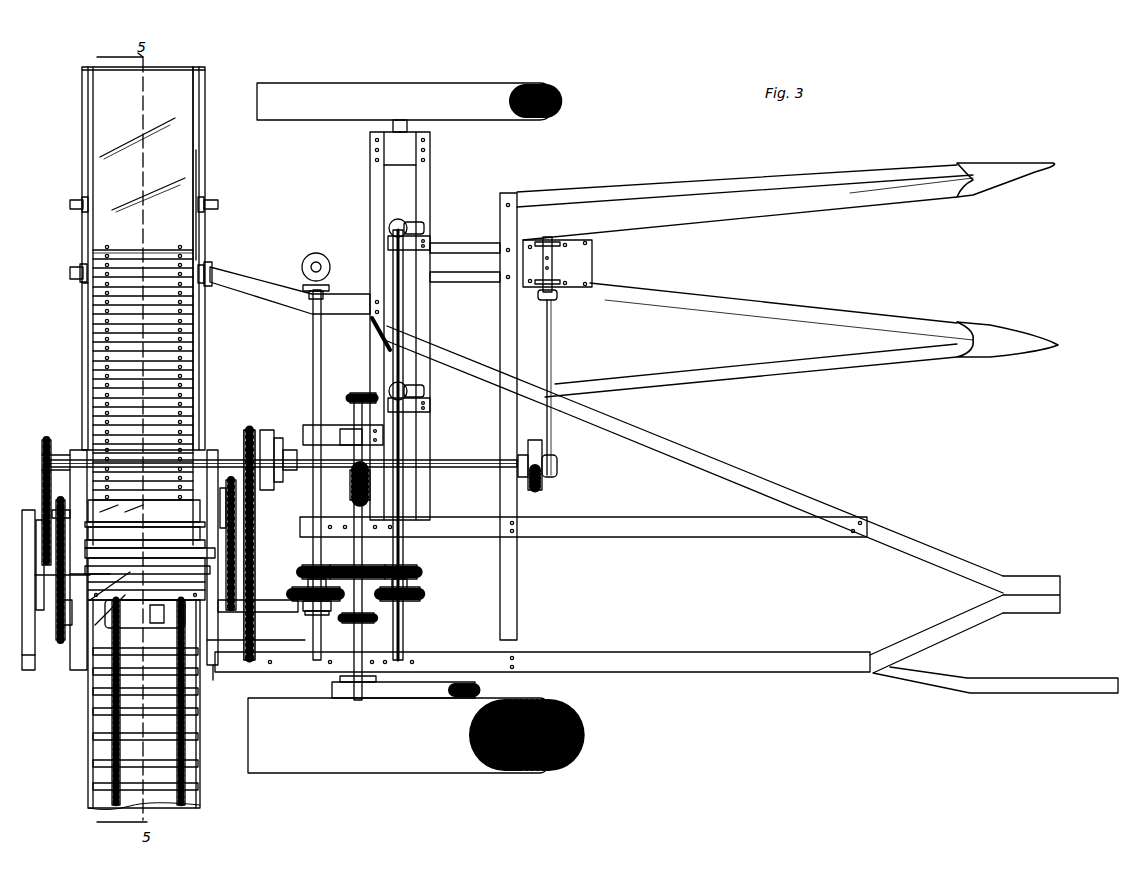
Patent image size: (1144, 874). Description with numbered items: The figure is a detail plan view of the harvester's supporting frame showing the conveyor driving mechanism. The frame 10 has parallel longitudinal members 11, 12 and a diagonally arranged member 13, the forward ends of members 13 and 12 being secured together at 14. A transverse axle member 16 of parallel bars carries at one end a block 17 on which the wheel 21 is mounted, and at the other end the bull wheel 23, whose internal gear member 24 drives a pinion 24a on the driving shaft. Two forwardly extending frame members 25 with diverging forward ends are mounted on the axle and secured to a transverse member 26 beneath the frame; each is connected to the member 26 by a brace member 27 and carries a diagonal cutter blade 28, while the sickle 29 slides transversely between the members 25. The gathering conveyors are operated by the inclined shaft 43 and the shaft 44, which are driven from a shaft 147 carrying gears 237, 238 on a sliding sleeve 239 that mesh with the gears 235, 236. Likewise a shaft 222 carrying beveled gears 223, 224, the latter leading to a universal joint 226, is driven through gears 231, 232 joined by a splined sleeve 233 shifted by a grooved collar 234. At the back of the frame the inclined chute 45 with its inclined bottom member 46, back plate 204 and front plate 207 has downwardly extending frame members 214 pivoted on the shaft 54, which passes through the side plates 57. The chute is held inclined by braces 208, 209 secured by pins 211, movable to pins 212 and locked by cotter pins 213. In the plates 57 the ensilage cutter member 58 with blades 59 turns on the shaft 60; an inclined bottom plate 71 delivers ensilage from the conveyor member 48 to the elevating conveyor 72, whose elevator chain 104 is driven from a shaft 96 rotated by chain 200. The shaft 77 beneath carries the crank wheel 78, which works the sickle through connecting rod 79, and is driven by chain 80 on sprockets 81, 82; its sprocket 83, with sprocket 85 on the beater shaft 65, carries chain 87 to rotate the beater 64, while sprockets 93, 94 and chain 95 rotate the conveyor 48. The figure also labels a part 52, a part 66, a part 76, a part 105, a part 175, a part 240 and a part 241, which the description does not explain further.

The frame 10 is at (789, 653).
The longitudinal member 11 is at (692, 536).
The longitudinal member 12 is at (654, 653).
The diagonally arranged member 13 is at (720, 468).
The member 14 is at (1018, 600).
The axle member 16 is at (428, 318).
The block 17 is at (400, 326).
The wheel 21 is at (405, 107).
The bull wheel 23 is at (400, 735).
The internal gear member 24 is at (476, 688).
The pinion 24a is at (356, 699).
The forwardly extending frame members 25 is at (471, 248).
The transverse member 26 is at (500, 343).
The brace member 27 is at (836, 180).
The cutter blade 28 is at (590, 283).
The sickle 29 is at (560, 266).
The inclined shaft 43 is at (412, 230).
The shaft 44 is at (420, 397).
The inclined chute 45 is at (185, 186).
The inclined bottom member 46 is at (143, 306).
The conveyor member 48 is at (157, 256).
The tray partition 52 is at (170, 336).
The shaft 54 is at (145, 535).
The side plates 57 is at (214, 668).
The ensilage cutter member 58 is at (88, 648).
The blades 59 is at (95, 630).
The shaft 60 is at (255, 624).
The beater 64 is at (198, 505).
The shaft 65 is at (62, 490).
The chain 66 is at (230, 612).
The inclined bottom plate 71 is at (158, 598).
The elevating conveyor 72 is at (200, 787).
The lever bar 76 is at (35, 672).
The shaft 77 is at (58, 457).
The crank wheel 78 is at (544, 480).
The connecting rod 79 is at (553, 360).
The chain 80 is at (246, 436).
The sprocket 81 is at (262, 630).
The sprocket 82 is at (258, 428).
The sprocket 83 is at (42, 462).
The sprocket 85 is at (36, 525).
The chain 87 is at (45, 442).
The sprocket 93 is at (198, 505).
The sprocket 94 is at (245, 642).
The chain 95 is at (235, 540).
The shaft 96 is at (64, 616).
The elevator chain 104 is at (190, 712).
The shoe 105 is at (145, 614).
The shaft 147 is at (404, 431).
The gear 175 is at (358, 394).
The chain 200 is at (140, 576).
The back plate 204 is at (85, 137).
The front plate 207 is at (200, 240).
The brace 208 is at (72, 273).
The brace 209 is at (214, 268).
The pins 211 is at (85, 287).
The pins 212 is at (72, 205).
The cotter pins 213 is at (80, 278).
The frame members 214 is at (205, 126).
The shaft 222 is at (312, 350).
The beveled gear 223 is at (325, 291).
The beveled gear 224 is at (330, 268).
The universal joint 226 is at (316, 261).
The gear 231 is at (300, 570).
The gear 232 is at (300, 596).
The sleeve 233 is at (305, 584).
The grooved collar 234 is at (310, 613).
The gear 235 is at (355, 556).
The gear 236 is at (350, 624).
The gear 237 is at (418, 570).
The gear 238 is at (422, 593).
The sleeve 239 is at (410, 584).
The clutch 240 is at (348, 430).
The pulley 241 is at (350, 482).